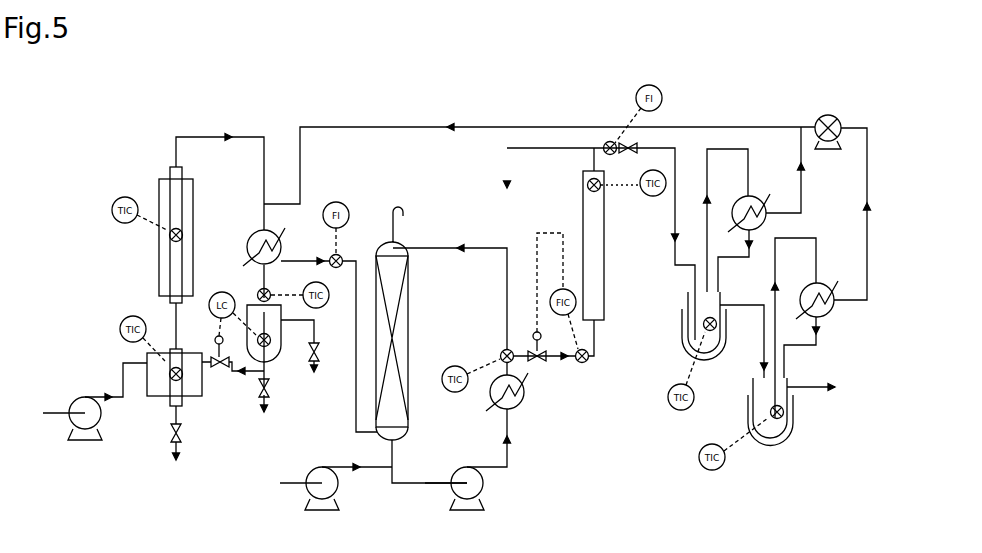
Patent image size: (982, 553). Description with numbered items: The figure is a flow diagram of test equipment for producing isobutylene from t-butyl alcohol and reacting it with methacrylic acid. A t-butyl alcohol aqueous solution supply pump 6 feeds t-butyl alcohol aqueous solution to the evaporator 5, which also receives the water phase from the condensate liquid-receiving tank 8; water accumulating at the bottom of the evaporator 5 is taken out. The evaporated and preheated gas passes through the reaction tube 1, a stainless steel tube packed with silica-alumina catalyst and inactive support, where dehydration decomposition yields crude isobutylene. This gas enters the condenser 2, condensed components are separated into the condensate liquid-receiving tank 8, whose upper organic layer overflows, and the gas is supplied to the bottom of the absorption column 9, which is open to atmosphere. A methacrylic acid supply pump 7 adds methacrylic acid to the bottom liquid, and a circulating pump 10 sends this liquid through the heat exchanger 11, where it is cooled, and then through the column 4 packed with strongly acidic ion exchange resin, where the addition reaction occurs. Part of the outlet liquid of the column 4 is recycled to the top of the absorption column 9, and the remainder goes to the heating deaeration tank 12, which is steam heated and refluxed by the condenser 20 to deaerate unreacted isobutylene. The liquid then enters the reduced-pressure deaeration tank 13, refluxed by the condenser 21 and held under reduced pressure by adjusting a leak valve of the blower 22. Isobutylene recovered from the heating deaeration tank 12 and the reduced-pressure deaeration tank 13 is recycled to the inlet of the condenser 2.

The reaction tube 1 is at (193, 184).
The condenser 2 is at (250, 238).
The column 4 is at (604, 258).
The evaporator 5 is at (185, 392).
The t-butyl alcohol aqueous solution supply pump 6 is at (97, 440).
The methacrylic acid supply pump 7 is at (336, 500).
The condensate liquid-receiving tank 8 is at (271, 362).
The absorption column 9 is at (404, 318).
The circulating pump 10 is at (482, 500).
The heat exchanger 11 is at (520, 404).
The heating deaeration tank 12 is at (682, 345).
The reduced-pressure deaeration tank 13 is at (793, 425).
The condenser 20 is at (758, 198).
The condenser 21 is at (832, 313).
The blower 22 is at (813, 116).